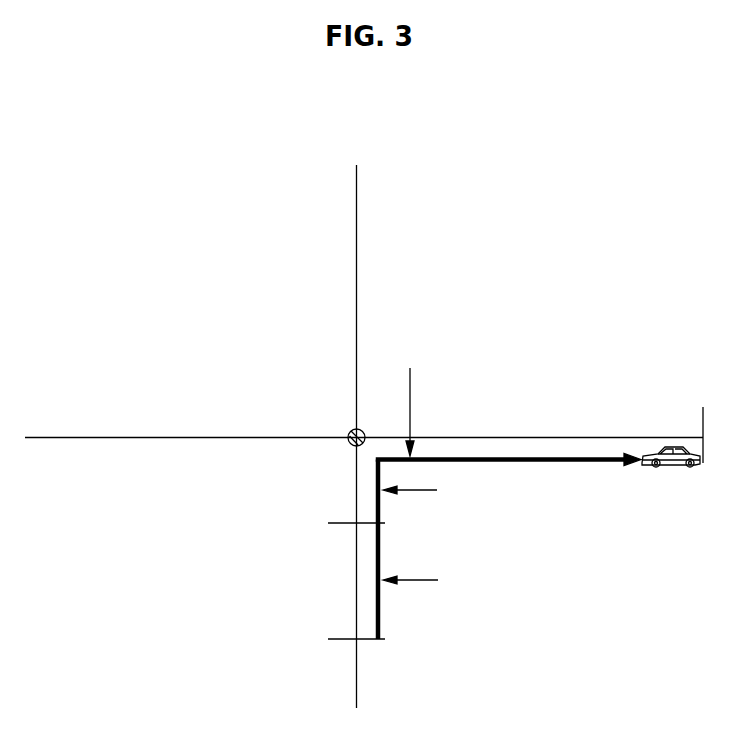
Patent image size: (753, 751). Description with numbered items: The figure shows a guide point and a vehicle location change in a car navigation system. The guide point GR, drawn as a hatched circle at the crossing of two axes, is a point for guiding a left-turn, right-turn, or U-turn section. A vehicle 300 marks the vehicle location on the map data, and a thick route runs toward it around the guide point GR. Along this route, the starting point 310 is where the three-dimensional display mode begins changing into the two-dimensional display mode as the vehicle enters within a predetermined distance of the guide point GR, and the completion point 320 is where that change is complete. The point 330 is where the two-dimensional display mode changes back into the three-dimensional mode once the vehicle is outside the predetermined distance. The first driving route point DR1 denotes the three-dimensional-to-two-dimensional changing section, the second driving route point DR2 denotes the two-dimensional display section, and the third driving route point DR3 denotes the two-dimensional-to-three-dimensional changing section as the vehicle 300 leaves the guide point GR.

The guide point GR is at (350, 431).
The vehicle 300 is at (664, 450).
The starting point 310 is at (380, 589).
The completion point 320 is at (380, 500).
The point of changing the two-dimensional display mode into the three-dimensional di 330 is at (452, 465).
The first driving route point DR1 is at (440, 581).
The second driving route point DR2 is at (440, 491).
The third driving route point DR3 is at (416, 396).